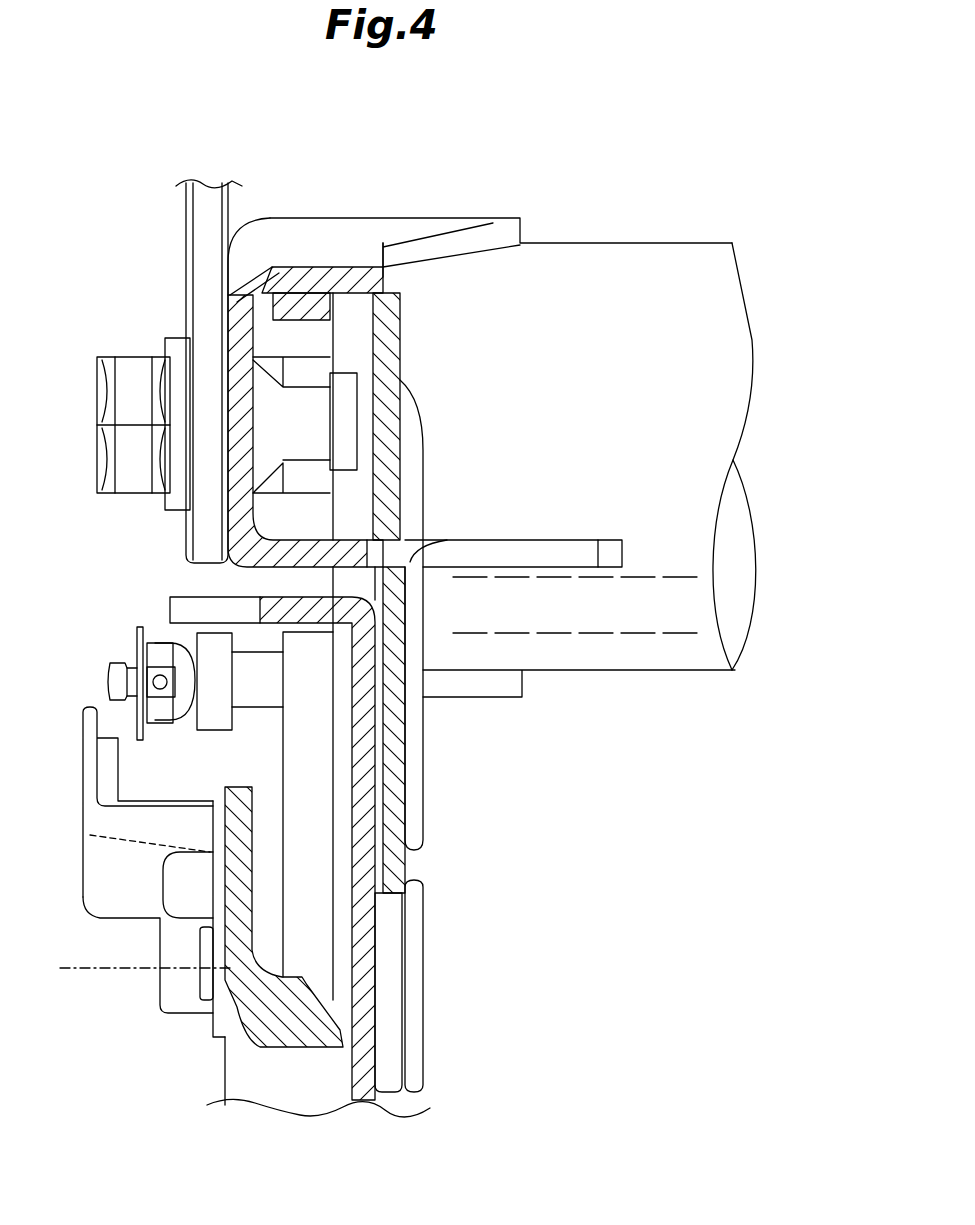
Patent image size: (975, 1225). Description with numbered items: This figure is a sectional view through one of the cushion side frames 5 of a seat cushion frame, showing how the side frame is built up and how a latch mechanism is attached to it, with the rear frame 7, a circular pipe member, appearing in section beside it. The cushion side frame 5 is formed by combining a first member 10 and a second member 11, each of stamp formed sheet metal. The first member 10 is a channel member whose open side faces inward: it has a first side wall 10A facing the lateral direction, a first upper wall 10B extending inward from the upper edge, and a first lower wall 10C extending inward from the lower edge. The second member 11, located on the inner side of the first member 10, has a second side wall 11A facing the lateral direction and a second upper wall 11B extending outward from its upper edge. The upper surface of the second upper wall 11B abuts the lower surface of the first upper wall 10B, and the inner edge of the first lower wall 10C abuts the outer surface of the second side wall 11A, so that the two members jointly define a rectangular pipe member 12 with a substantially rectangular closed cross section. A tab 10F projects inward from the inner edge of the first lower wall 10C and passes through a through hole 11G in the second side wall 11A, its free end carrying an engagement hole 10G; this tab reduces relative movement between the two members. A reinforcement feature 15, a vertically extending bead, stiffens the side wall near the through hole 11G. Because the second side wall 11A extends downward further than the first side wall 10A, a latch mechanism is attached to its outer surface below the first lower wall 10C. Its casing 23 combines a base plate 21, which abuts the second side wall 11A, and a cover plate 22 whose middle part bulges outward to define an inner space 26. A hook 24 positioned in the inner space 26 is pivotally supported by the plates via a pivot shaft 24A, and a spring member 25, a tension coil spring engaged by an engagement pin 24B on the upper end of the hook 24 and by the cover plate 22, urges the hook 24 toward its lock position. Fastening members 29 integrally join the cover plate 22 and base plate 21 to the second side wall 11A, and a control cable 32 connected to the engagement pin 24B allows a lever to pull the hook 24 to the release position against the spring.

The cushion side frame 5 is at (356, 194).
The rear frame 7 is at (614, 257).
The first member 10 is at (404, 226).
The first side wall 10A is at (215, 345).
The first upper wall 10B is at (293, 270).
The first lower wall 10C is at (305, 547).
The tab 10F is at (622, 550).
The engagement hole 10G is at (590, 542).
The second member 11 is at (405, 336).
The second side wall 11A is at (405, 383).
The second upper wall 11B is at (313, 300).
The through hole 11G is at (410, 560).
The rectangular pipe member 12 is at (416, 314).
The reinforcement feature 15 is at (425, 730).
The base plate 21 is at (373, 937).
The cover plate 22 is at (285, 1040).
The casing 23 is at (211, 1060).
The hook 24 is at (317, 868).
The pivot shaft 24A is at (200, 955).
The engagement pin 24B is at (260, 695).
The spring member 25 is at (175, 645).
The inner space 26 is at (392, 822).
The fastening member 29 is at (418, 1000).
The control cable 32 is at (108, 675).